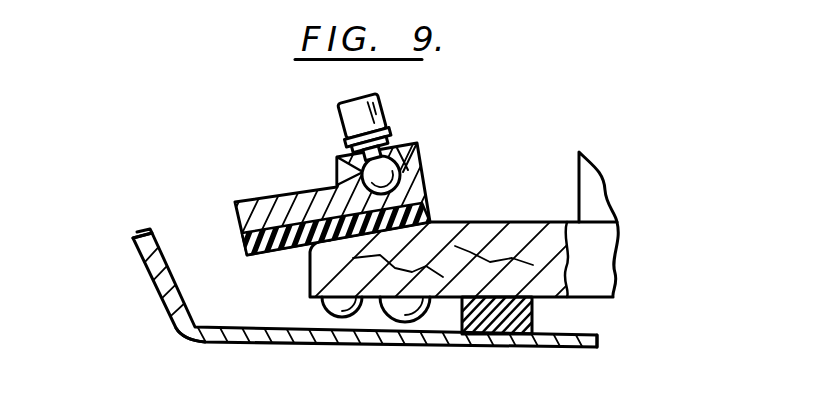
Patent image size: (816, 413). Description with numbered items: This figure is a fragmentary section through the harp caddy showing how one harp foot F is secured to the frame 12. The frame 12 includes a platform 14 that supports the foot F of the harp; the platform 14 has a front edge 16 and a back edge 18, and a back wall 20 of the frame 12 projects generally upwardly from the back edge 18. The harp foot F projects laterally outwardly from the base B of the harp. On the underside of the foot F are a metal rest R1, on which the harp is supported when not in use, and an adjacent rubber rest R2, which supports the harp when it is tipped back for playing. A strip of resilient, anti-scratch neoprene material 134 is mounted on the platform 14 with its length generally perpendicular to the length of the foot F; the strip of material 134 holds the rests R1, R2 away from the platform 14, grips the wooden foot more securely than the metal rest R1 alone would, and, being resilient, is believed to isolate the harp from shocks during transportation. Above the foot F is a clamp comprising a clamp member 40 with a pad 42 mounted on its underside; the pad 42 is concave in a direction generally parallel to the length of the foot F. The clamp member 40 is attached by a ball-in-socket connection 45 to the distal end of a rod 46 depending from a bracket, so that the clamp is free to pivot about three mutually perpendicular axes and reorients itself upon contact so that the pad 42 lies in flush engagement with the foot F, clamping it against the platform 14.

The frame 12 is at (162, 329).
The platform 14 is at (333, 347).
The front edge 16 is at (600, 338).
The back edge 18 is at (196, 324).
The back wall 20 is at (155, 240).
The clamp member 40 is at (257, 201).
The pad 42 is at (430, 216).
The ball-in-socket connection 45 is at (421, 148).
The rod 46 is at (381, 99).
The resilient anti-scratch material 134 is at (470, 345).
The metal rest R1 is at (405, 344).
The rubber rest R2 is at (313, 345).
The harp foot F is at (497, 228).
The base B is at (593, 210).